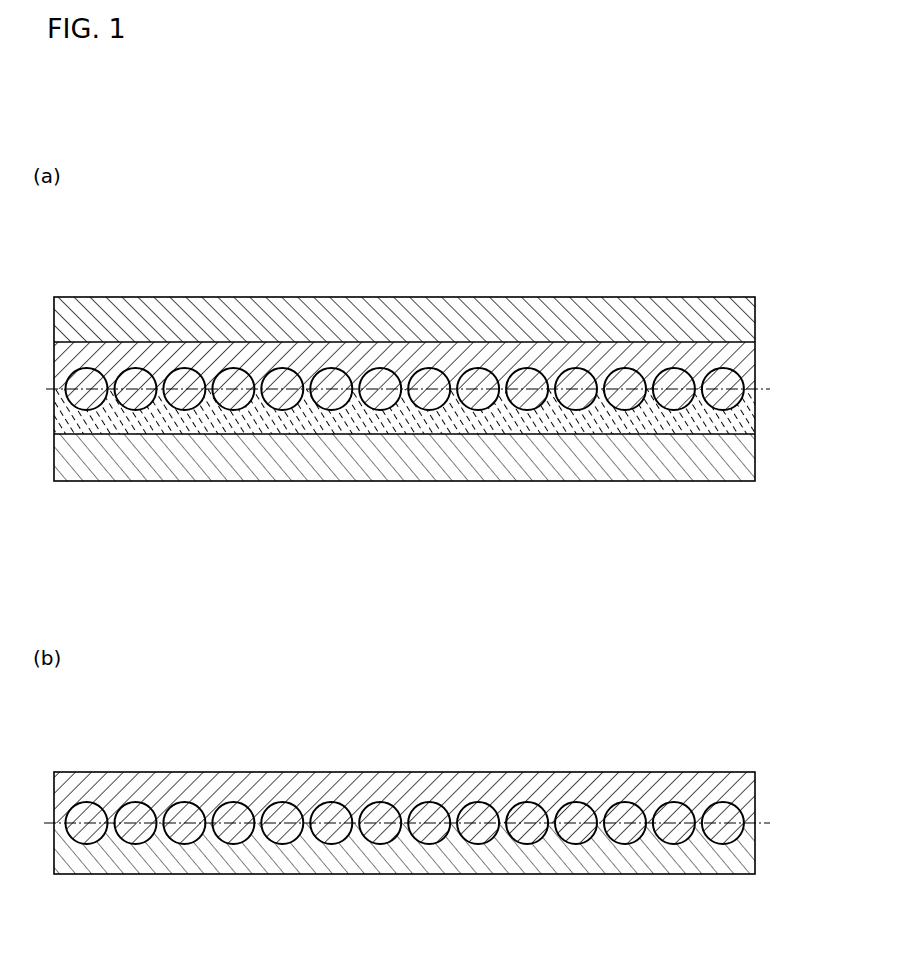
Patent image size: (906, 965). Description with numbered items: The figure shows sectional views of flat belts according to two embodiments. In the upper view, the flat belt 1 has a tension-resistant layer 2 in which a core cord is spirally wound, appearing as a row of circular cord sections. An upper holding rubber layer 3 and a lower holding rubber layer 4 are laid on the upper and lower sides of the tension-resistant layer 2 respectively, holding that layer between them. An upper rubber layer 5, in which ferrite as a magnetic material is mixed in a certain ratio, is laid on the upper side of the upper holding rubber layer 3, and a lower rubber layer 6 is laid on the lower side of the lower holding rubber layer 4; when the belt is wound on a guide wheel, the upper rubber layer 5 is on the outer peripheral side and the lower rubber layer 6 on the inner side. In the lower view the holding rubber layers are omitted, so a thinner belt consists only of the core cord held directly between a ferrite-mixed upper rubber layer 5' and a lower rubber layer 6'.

The flat belt 1 is at (217, 213).
The tension-resistant layer 2 is at (755, 403).
The upper holding rubber layer 3 is at (412, 345).
The lower holding rubber layer 4 is at (498, 436).
The upper rubber layer 5 is at (404, 285).
The lower rubber layer 6 is at (404, 484).
The upper rubber layer 5' is at (404, 770).
The lower rubber layer 6' is at (404, 873).